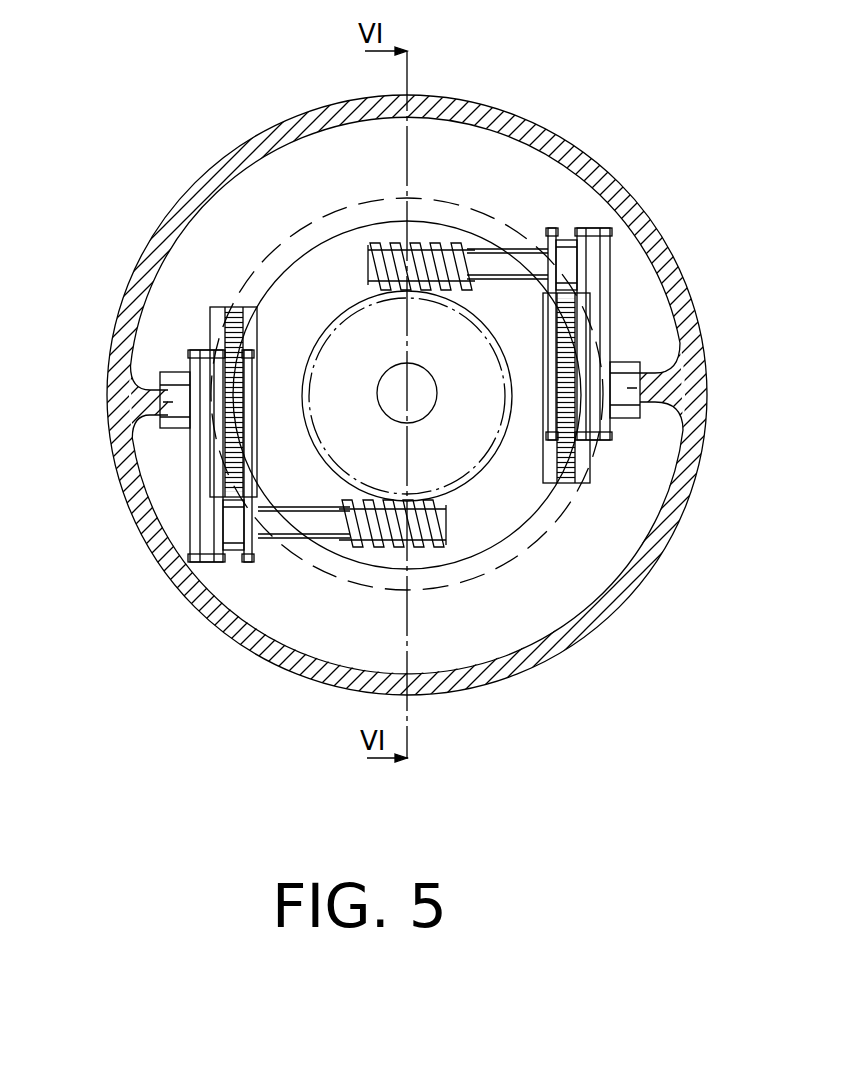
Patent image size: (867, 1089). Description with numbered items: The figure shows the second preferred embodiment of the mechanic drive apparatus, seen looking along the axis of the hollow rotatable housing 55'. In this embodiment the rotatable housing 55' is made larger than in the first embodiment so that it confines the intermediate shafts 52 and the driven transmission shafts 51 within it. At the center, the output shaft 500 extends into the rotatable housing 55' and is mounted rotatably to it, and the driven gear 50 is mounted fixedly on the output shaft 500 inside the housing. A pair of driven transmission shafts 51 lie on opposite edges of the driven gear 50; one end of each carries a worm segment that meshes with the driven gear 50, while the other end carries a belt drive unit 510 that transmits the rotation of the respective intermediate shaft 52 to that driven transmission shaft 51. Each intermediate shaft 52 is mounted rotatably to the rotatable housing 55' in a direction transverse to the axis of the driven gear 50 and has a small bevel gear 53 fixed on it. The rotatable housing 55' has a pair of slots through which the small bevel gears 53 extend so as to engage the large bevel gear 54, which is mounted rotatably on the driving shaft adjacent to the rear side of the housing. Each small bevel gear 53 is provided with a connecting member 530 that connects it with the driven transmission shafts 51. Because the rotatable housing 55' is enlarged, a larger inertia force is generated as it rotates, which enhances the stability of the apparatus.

The driven gear 50 is at (487, 473).
The output shaft 500 is at (397, 373).
The driven transmission shaft 51 is at (527, 250).
The belt drive unit 510 is at (615, 273).
The intermediate shaft 52 is at (703, 380).
The small bevel gear 53 is at (592, 462).
The connecting member 530 is at (562, 232).
The large bevel gear 54 is at (463, 553).
The rotatable housing 55' is at (407, 375).